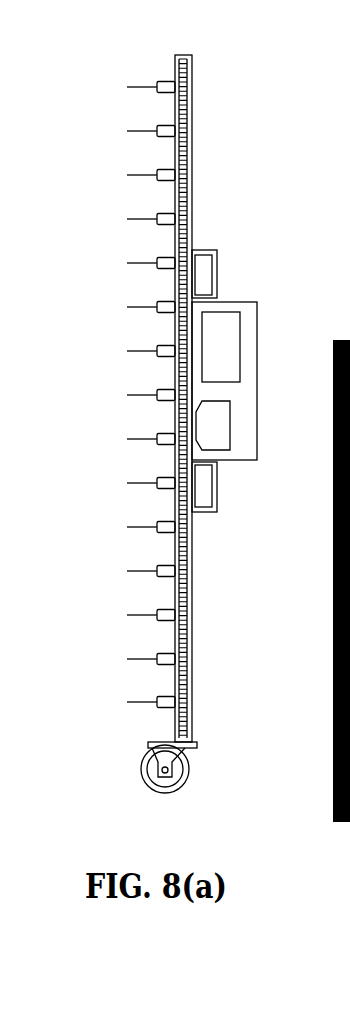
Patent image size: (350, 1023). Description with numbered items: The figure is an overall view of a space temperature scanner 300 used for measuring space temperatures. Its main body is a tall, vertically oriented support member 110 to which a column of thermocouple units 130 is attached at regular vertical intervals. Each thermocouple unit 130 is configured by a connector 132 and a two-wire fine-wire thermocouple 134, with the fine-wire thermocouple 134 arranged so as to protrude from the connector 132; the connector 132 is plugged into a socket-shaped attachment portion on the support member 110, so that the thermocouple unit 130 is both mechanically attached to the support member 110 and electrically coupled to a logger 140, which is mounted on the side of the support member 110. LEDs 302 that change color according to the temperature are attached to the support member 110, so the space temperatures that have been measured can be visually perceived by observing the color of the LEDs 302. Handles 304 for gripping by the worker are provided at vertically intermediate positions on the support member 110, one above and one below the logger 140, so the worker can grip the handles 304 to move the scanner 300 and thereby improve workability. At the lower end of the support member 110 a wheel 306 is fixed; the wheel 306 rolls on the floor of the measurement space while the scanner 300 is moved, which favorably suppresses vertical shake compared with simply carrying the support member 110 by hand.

The scanner 300 is at (262, 23).
The LEDs 302 is at (193, 76).
The support member 110 is at (193, 120).
The thermocouple unit 130 is at (116, 81).
The connector 132 is at (165, 84).
The fine-wire thermocouple 134 is at (143, 88).
The handles 304 is at (215, 265).
The logger 140 is at (250, 317).
The wheel 306 is at (190, 775).